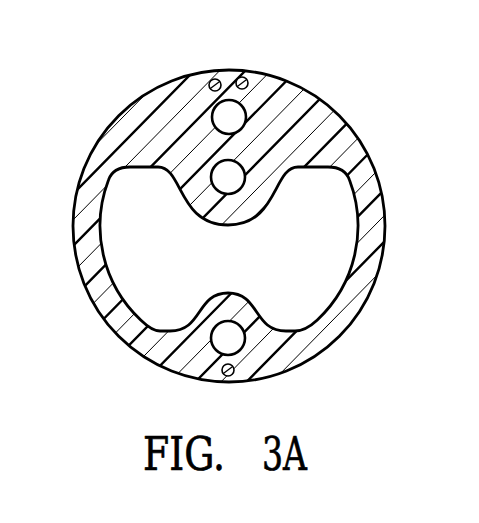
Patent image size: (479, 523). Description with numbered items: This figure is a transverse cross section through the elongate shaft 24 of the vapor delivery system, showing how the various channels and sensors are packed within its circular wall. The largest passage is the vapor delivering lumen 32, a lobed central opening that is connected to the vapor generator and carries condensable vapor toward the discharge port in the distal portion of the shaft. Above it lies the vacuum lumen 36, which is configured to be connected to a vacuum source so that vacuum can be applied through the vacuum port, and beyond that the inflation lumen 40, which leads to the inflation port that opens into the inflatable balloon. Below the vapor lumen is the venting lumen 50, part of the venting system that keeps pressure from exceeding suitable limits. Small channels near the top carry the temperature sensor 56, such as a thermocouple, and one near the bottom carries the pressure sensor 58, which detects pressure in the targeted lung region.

The elongate shaft 24 is at (380, 184).
The vapor delivering lumen 32 is at (125, 255).
The vacuum lumen 36 is at (220, 177).
The inflation lumen 40 is at (218, 117).
The venting lumen 50 is at (237, 341).
The temperature sensor 56 is at (257, 73).
The pressure sensor 58 is at (226, 373).